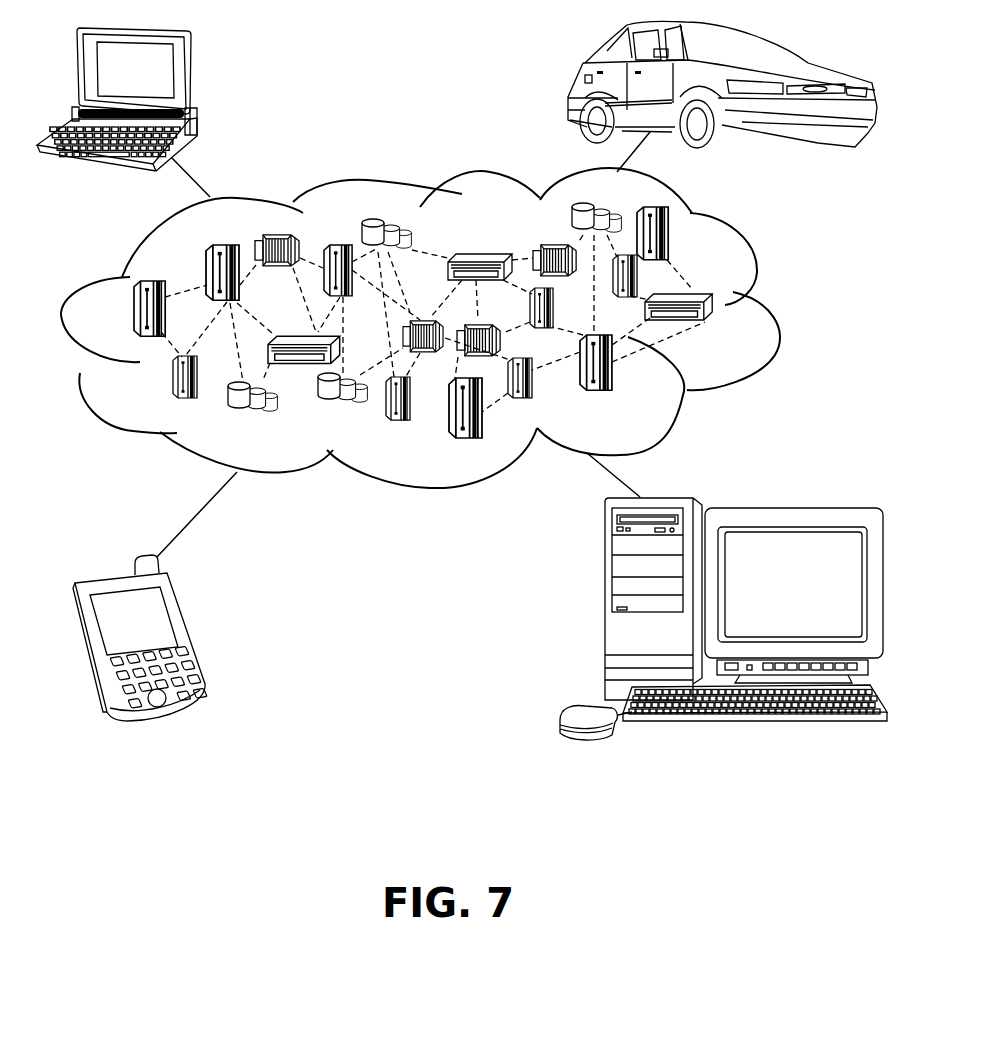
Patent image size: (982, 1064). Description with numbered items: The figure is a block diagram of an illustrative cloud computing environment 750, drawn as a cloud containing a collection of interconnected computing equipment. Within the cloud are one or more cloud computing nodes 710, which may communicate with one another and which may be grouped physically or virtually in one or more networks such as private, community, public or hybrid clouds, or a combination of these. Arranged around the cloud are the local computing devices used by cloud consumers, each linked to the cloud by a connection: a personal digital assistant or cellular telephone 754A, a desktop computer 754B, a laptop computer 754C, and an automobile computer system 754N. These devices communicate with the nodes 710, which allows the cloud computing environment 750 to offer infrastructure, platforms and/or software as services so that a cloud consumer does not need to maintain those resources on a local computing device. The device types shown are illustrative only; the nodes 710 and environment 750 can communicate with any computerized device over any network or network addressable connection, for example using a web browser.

The cloud computing nodes 710 is at (735, 326).
The cloud computing environment 750 is at (757, 270).
The personal digital assistant (PDA) or cellular telephone 754A is at (187, 632).
The desktop computer 754B is at (605, 610).
The laptop computer 754C is at (190, 77).
The automobile computer system 754N is at (583, 64).